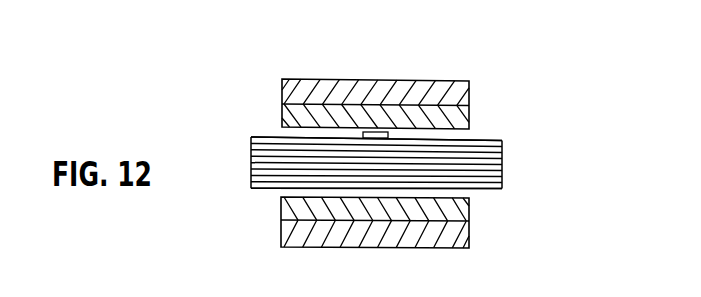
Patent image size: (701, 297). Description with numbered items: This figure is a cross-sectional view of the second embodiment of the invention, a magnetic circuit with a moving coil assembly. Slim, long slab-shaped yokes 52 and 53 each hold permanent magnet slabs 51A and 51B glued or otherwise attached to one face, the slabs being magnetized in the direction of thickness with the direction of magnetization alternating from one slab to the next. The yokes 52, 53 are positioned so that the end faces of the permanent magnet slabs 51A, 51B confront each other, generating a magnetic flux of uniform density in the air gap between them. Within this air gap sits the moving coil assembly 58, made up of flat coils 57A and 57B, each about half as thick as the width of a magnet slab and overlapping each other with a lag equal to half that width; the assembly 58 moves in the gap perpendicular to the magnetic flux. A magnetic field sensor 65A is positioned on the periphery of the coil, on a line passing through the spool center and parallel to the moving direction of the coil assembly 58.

The permanent magnet slab 51A is at (469, 113).
The permanent magnet slab 51B is at (470, 210).
The slab-shaped yoke 52 is at (431, 82).
The slab-shaped yoke 53 is at (434, 248).
The flat coil 57A is at (251, 150).
The flat coil 57B is at (251, 177).
The moving coil assembly 58 is at (505, 163).
The magnetic field sensor 65A is at (363, 131).